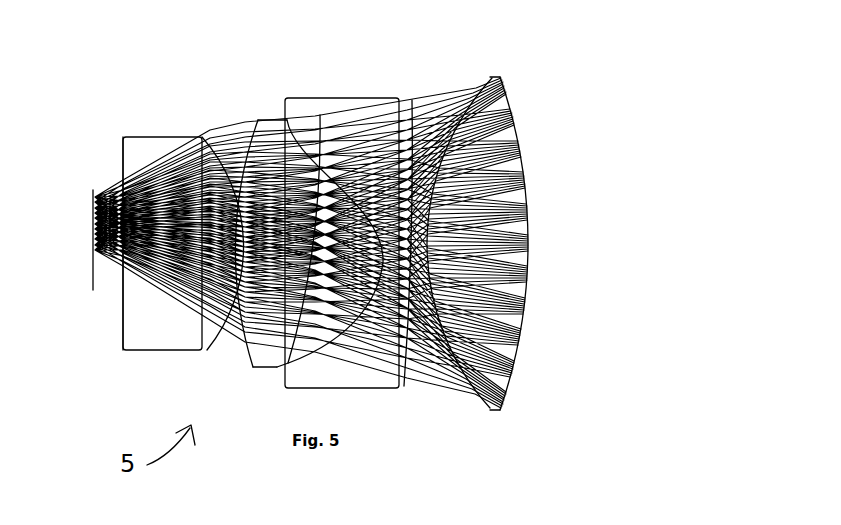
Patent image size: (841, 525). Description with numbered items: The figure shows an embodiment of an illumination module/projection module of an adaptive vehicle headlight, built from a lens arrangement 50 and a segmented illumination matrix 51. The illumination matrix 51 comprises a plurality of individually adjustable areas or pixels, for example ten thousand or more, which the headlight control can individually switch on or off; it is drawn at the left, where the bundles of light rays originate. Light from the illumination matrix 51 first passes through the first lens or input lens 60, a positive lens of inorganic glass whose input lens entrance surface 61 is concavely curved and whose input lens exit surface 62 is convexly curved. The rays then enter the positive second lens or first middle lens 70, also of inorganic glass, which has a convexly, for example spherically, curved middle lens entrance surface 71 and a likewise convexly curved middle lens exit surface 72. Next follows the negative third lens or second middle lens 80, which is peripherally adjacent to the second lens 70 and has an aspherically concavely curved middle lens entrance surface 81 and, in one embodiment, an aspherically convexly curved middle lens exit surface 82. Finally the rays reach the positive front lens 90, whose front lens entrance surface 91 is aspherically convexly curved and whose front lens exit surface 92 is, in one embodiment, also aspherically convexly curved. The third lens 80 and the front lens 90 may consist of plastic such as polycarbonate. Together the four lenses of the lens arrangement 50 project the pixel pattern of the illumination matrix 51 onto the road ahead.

The lens arrangement 50 is at (497, 70).
The illumination matrix 51 is at (92, 274).
The first lens (input lens) 60 is at (155, 351).
The input lens entrance surface 61 is at (122, 330).
The input lens exit surface 62 is at (207, 350).
The second lens (first middle lens) 70 is at (259, 369).
The middle lens entrance surface 71 is at (246, 130).
The middle lens exit surface 72 is at (320, 117).
The third lens (second middle lens) 80 is at (357, 389).
The middle lens entrance surface 81 is at (285, 366).
The middle lens exit surface 82 is at (409, 385).
The front lens 90 is at (493, 411).
The front lens entrance surface 91 is at (460, 114).
The front lens exit surface 92 is at (527, 258).